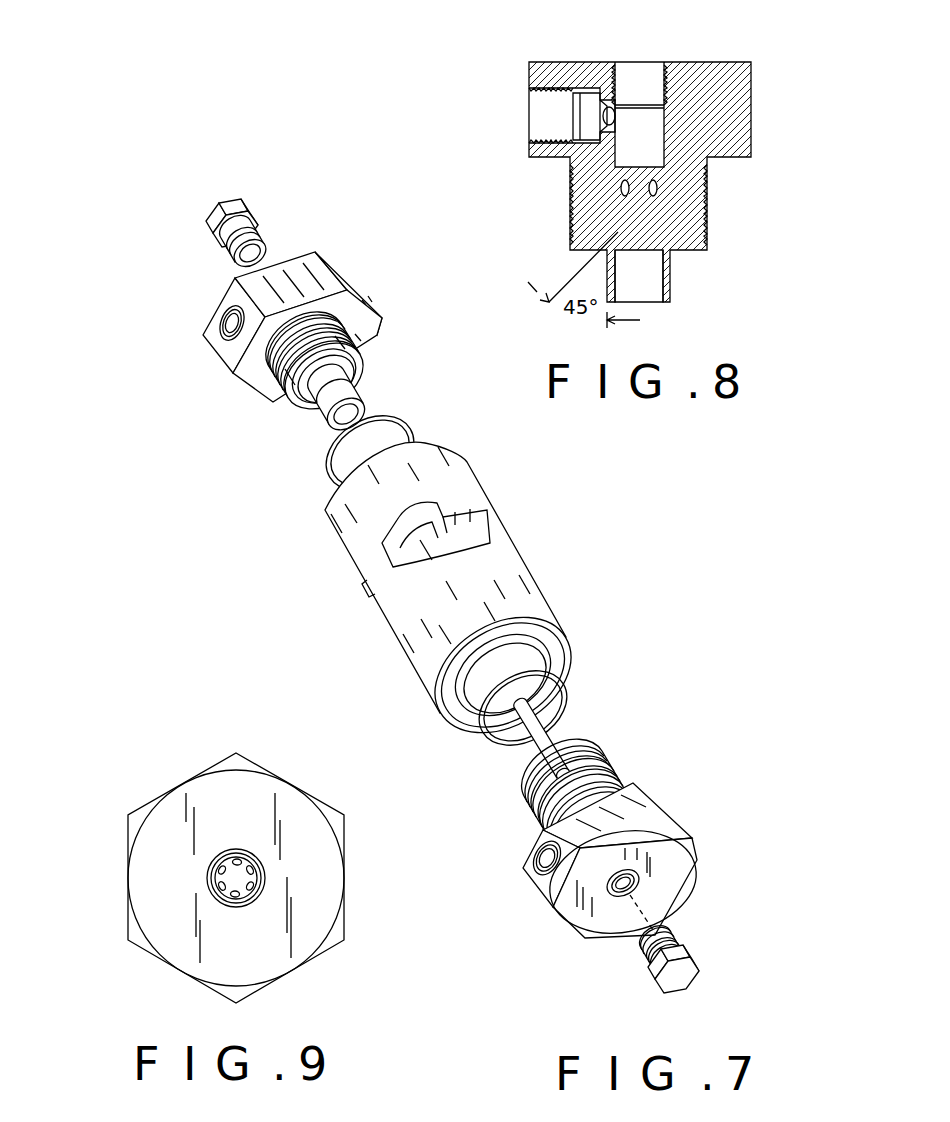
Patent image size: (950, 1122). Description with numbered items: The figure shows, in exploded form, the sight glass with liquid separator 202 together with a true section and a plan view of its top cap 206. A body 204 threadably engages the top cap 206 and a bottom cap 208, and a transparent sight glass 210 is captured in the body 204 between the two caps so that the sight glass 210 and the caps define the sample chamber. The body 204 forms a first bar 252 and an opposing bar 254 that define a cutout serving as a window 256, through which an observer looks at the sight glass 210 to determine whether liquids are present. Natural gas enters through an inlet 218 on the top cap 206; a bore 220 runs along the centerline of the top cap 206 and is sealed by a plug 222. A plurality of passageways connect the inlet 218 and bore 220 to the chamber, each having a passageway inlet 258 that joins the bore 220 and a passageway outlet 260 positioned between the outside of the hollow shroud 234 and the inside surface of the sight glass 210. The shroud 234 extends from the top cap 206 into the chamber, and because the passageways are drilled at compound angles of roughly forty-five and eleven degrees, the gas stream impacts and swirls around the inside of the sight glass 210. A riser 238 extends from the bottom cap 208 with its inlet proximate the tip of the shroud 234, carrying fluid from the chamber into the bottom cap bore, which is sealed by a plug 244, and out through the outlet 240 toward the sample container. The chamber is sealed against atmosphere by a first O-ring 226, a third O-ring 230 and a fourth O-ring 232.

In FIG. 7, the nozzle assembly 202 is at (163, 205).
In FIG. 7, the body 204 is at (472, 488).
In FIG. 7, the top cap 206 is at (333, 255).
In FIG. 8, the top cap 206 is at (752, 140).
In FIG. 9, the top cap 206 is at (236, 752).
In FIG. 7, the bottom cap 208 is at (700, 833).
In FIG. 7, the sight glass 210 is at (425, 542).
In FIG. 7, the inlet 218 is at (198, 316).
In FIG. 8, the inlet 218 is at (573, 117).
In FIG. 8, the bore 220 is at (637, 120).
In FIG. 9, the bore 220 is at (205, 872).
In FIG. 7, the plug 222 is at (220, 206).
In FIG. 7, the first O-ring 226 is at (330, 462).
In FIG. 7, the third O-ring 230 is at (560, 708).
In FIG. 7, the fourth O-ring 232 is at (500, 665).
In FIG. 7, the hollow shroud 234 is at (367, 393).
In FIG. 8, the hollow shroud 234 is at (672, 280).
In FIG. 7, the riser 238 is at (560, 760).
In FIG. 7, the outlet 240 is at (535, 858).
In FIG. 7, the plug 244 is at (680, 943).
In FIG. 7, the first bar 252 is at (372, 585).
In FIG. 7, the opposing bar 254 is at (490, 525).
In FIG. 7, the window 256 is at (400, 515).
In FIG. 9, the passageway inlet 258 is at (228, 860).
In FIG. 7, the passageway outlet 260 is at (350, 330).
In FIG. 8, the passageway outlet 260 is at (660, 230).